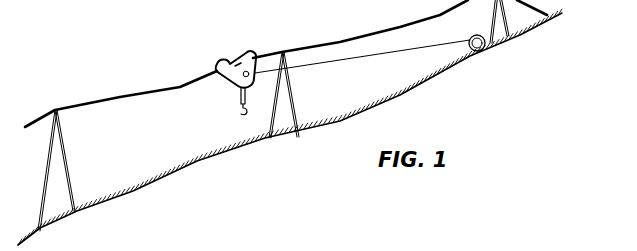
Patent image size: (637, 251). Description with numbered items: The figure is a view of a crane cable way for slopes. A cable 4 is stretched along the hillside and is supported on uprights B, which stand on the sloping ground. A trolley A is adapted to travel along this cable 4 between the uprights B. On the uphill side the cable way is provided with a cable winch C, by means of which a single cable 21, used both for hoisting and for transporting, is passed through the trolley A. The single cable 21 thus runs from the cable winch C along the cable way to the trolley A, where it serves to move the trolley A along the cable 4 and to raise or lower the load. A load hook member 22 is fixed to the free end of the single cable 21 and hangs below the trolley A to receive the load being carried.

The trolley A is at (237, 62).
The uprights B is at (66, 170).
The cable winch C is at (480, 34).
The cable 4 is at (286, 63).
The single cable 21 is at (372, 58).
The load hook member 22 is at (240, 108).